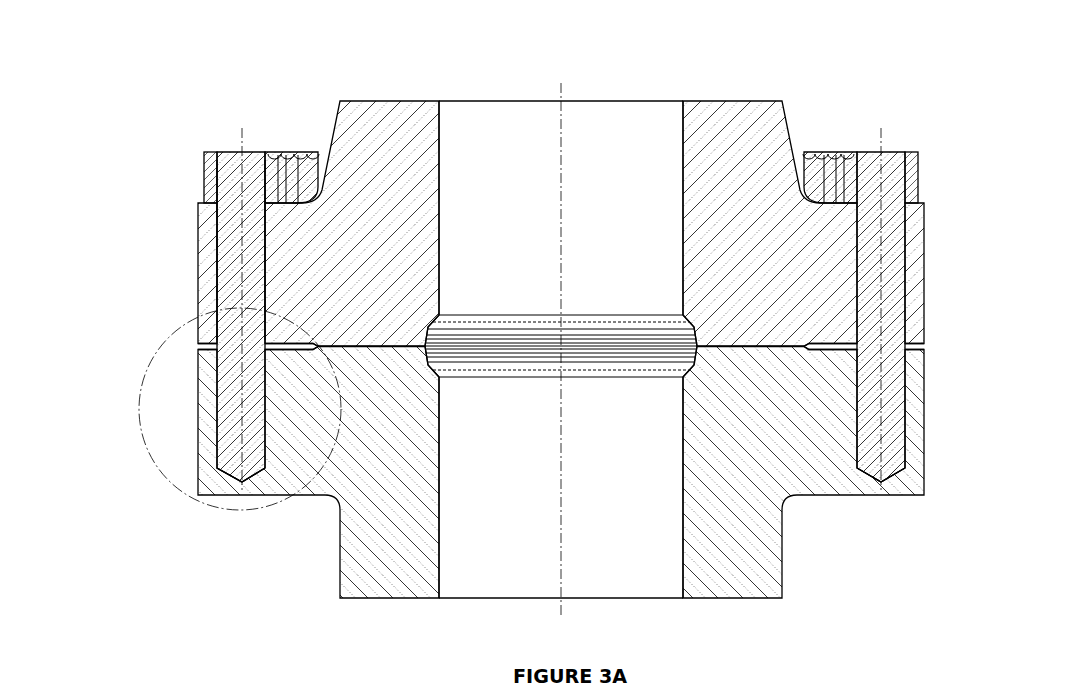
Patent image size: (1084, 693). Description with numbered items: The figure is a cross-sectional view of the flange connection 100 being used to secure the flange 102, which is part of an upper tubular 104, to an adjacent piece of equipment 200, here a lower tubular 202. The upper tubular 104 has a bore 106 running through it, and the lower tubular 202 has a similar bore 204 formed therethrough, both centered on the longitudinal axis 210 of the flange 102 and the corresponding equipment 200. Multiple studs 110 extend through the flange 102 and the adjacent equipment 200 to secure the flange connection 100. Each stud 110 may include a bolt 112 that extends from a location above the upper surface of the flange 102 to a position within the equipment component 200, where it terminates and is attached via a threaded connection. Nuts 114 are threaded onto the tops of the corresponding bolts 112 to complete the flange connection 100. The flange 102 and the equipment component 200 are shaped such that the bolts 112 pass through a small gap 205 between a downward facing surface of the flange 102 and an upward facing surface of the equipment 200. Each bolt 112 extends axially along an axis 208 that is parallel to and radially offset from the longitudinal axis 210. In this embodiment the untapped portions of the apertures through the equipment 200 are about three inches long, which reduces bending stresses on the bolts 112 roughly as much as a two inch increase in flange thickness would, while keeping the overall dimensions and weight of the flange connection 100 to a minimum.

The flange connection 100 is at (501, 328).
The flange 102 is at (207, 275).
The upper tubular 104 is at (372, 142).
The bore 106 is at (440, 140).
The stud 110 is at (232, 150).
The bolt 112 is at (230, 247).
The nut 114 is at (204, 166).
The equipment 200 is at (522, 473).
The lower tubular 202 is at (375, 547).
The bore 204 is at (440, 538).
The gap 205 is at (202, 345).
The axis 208 is at (240, 389).
The longitudinal axis 210 is at (562, 513).